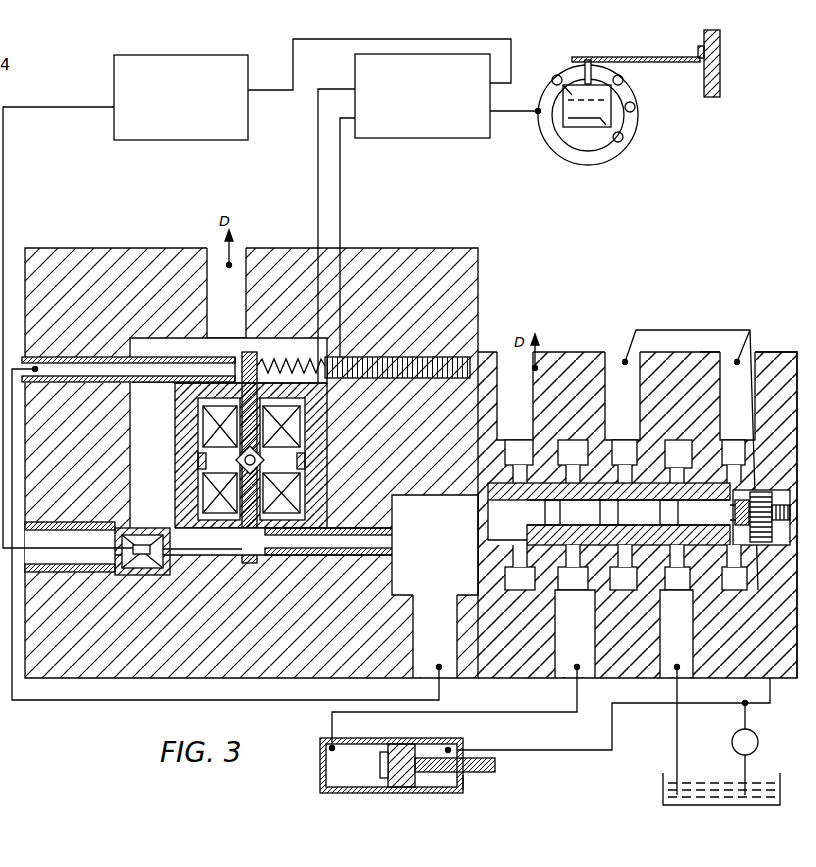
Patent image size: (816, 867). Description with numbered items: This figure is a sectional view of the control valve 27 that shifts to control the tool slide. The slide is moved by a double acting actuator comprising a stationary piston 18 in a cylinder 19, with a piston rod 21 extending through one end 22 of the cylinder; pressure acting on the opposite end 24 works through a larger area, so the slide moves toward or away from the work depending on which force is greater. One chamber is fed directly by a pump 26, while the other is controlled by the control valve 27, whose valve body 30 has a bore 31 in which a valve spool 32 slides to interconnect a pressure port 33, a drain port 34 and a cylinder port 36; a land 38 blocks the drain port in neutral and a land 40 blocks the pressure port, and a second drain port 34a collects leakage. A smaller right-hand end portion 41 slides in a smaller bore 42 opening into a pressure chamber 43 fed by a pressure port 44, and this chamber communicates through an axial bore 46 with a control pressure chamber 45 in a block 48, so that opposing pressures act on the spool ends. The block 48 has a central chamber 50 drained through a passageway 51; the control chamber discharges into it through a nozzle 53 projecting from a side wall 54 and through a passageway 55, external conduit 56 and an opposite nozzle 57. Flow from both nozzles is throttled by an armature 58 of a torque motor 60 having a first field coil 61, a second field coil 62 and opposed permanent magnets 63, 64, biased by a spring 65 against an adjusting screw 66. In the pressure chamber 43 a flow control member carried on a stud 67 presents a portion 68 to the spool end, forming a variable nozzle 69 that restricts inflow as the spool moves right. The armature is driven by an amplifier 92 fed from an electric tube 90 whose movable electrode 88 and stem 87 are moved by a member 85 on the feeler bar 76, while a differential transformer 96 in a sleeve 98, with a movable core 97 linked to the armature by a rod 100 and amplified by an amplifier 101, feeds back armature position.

The piston 18 is at (400, 789).
The cylinder 19 is at (360, 790).
The piston rod 21 is at (482, 773).
The end of the cylinder 22 is at (464, 790).
The opposite end of the cylinder 24 is at (387, 777).
The pump 26 is at (758, 743).
The control valve 27 is at (776, 346).
The valve body 30 is at (584, 352).
The bore 31 is at (478, 536).
The valve spool 32 is at (628, 517).
The pressure port 33 is at (622, 414).
The drain port 34 is at (515, 414).
The drain port 34a is at (676, 634).
The cylinder port 36 is at (575, 634).
The land 38 is at (533, 491).
The land 40 is at (605, 536).
The right-hand end portion 41 is at (668, 545).
The bore 42 is at (695, 535).
The pressure chamber 43 is at (756, 493).
The pressure port 44 is at (737, 414).
The control pressure chamber 45 is at (460, 510).
The axial bore 46 is at (528, 513).
The block 48 is at (478, 260).
The central chamber 50 is at (160, 433).
The passageway 51 is at (247, 247).
The nozzle 53 is at (396, 527).
The side wall 54 is at (340, 539).
The passageway 55 is at (440, 597).
The external conduit 56 is at (102, 700).
The nozzle 57 is at (172, 356).
The armature 58 is at (245, 560).
The torque motor 60 is at (174, 470).
The first field coil 61 is at (215, 410).
The second field coil 62 is at (215, 496).
The permanent magnet 63 is at (233, 455).
The permanent magnet 64 is at (300, 462).
The spring 65 is at (302, 357).
The adjusting screw 66 is at (470, 348).
The stud 67 is at (776, 538).
The portion of the flow control member 68 is at (735, 512).
The variable nozzle 69 is at (748, 497).
The feeler bar 76 is at (720, 73).
The member 85 is at (660, 58).
The stem 87 is at (575, 68).
The movable electrode 88 is at (600, 78).
The electric tube 90 is at (595, 116).
The amplifier 92 is at (410, 138).
The differential transformer 96 is at (114, 524).
The movable core 97 is at (141, 545).
The sleeve 98 is at (170, 576).
The rod 100 is at (196, 541).
The amplifier 101 is at (114, 66).